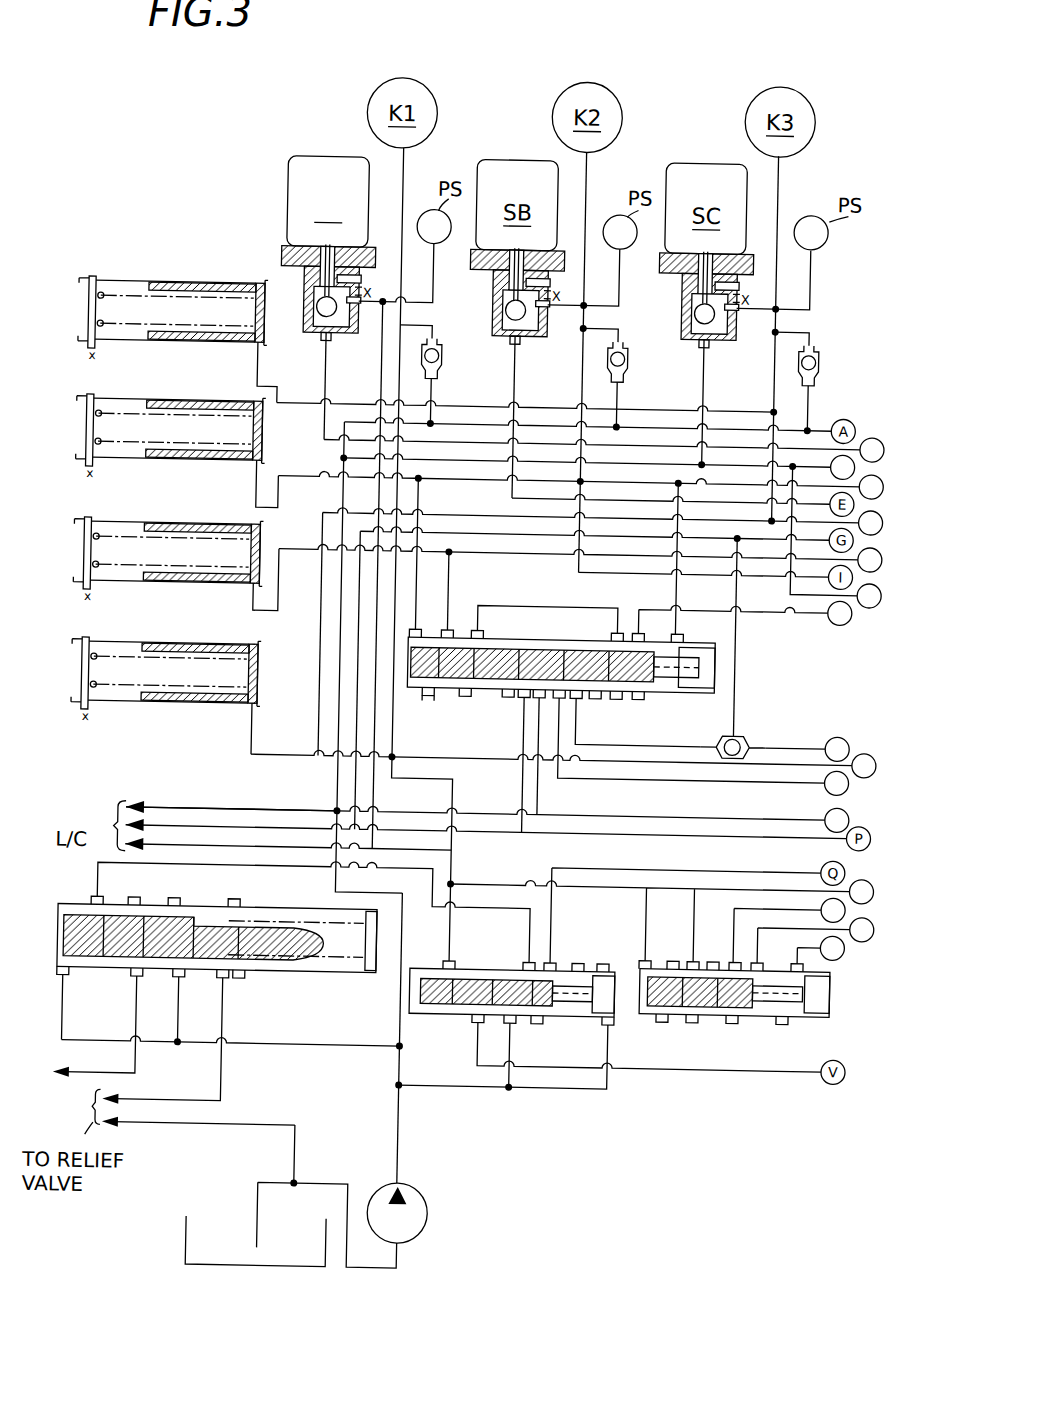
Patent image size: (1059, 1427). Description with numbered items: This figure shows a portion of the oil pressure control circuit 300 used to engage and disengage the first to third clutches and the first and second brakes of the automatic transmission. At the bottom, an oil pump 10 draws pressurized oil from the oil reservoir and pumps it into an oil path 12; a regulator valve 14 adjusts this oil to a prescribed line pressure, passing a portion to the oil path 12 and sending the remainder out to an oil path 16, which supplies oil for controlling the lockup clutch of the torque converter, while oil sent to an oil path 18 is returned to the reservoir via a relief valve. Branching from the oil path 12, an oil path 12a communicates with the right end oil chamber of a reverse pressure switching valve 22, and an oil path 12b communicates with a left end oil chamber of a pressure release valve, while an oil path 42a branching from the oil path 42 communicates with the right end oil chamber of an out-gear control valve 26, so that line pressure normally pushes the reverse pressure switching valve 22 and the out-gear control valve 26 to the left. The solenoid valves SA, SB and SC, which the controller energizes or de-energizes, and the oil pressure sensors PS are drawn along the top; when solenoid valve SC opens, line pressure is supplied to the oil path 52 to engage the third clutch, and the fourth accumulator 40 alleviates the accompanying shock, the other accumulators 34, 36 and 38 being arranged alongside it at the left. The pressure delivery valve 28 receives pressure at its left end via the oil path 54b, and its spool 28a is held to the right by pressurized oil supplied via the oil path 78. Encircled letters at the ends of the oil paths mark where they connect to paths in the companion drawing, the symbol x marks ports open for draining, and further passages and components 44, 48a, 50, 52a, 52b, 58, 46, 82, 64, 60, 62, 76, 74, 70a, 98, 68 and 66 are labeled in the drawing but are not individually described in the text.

The oil pressure control circuit 300 is at (255, 232).
The fourth accumulator 40 is at (160, 346).
The accumulator 36 is at (152, 466).
The accumulator 38 is at (156, 588).
The accumulator 34 is at (143, 708).
The oil path 42 is at (321, 367).
The oil passage 44 is at (372, 310).
The oil passage 48a is at (510, 372).
The oil passage 50 is at (254, 487).
The oil path 52 is at (772, 163).
The oil path 12 is at (341, 665).
The oil passage 82 is at (880, 472).
The oil passage 52a is at (882, 508).
The oil passage 52b is at (321, 516).
The oil path 54b is at (450, 565).
The oil path 78 is at (532, 606).
The oil passage 58 is at (742, 638).
The oil path 12b is at (868, 600).
The oil path 42a is at (838, 616).
The oil passage 46 is at (396, 730).
The pressure delivery valve 28 is at (628, 702).
The spool 28a is at (465, 721).
The oil passage 64 is at (690, 740).
The check valve 60 is at (748, 728).
The oil passage 62 is at (800, 741).
The lubrication passage 76 is at (247, 812).
The oil passage 74 is at (585, 812).
The oil passage 70a is at (665, 775).
The oil passage 98 is at (702, 882).
The regulator valve 14 is at (234, 905).
The oil passage 68 is at (855, 903).
The oil passage 66 is at (872, 932).
The oil path 16 is at (150, 1072).
The oil path 18 is at (240, 1083).
The reverse pressure switching valve 22 is at (552, 1028).
The out-gear control valve 26 is at (740, 1028).
The oil path 12a is at (572, 1087).
The oil pump 10 is at (440, 1215).